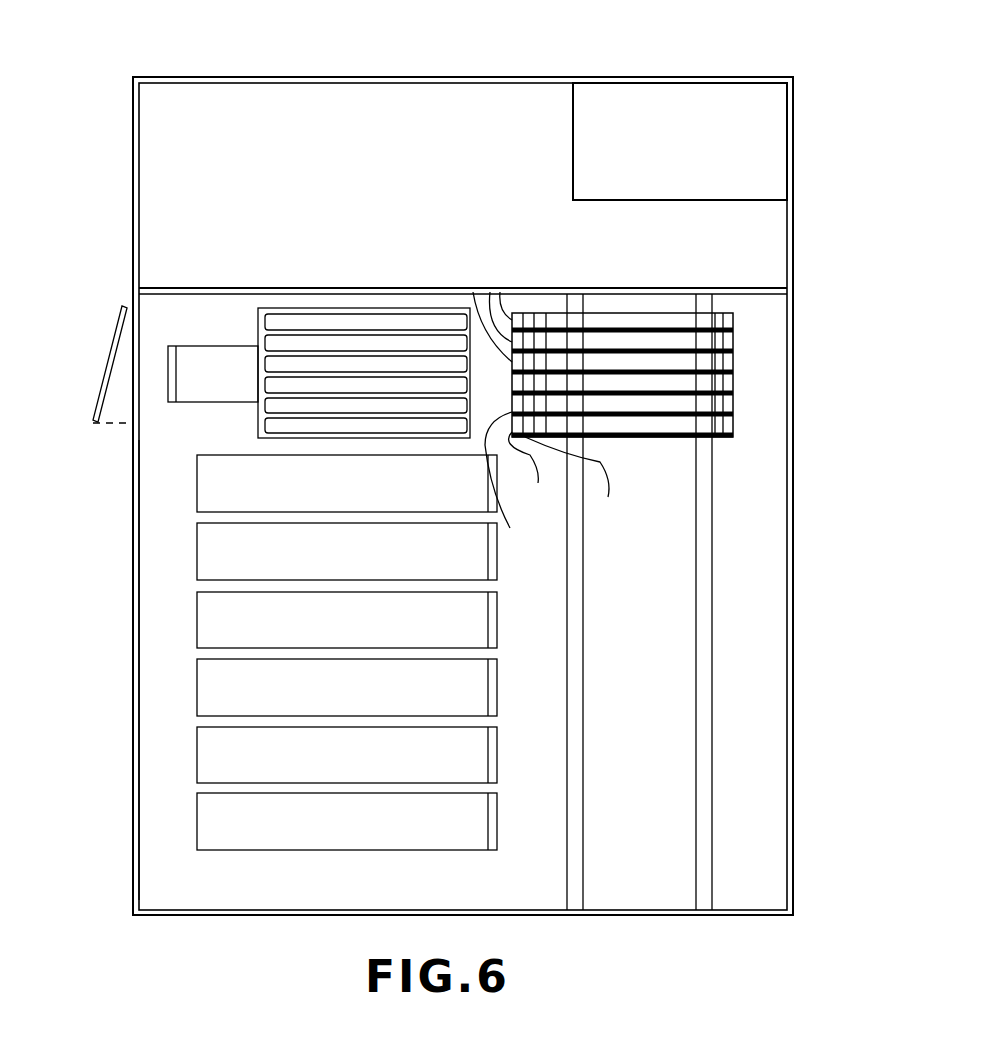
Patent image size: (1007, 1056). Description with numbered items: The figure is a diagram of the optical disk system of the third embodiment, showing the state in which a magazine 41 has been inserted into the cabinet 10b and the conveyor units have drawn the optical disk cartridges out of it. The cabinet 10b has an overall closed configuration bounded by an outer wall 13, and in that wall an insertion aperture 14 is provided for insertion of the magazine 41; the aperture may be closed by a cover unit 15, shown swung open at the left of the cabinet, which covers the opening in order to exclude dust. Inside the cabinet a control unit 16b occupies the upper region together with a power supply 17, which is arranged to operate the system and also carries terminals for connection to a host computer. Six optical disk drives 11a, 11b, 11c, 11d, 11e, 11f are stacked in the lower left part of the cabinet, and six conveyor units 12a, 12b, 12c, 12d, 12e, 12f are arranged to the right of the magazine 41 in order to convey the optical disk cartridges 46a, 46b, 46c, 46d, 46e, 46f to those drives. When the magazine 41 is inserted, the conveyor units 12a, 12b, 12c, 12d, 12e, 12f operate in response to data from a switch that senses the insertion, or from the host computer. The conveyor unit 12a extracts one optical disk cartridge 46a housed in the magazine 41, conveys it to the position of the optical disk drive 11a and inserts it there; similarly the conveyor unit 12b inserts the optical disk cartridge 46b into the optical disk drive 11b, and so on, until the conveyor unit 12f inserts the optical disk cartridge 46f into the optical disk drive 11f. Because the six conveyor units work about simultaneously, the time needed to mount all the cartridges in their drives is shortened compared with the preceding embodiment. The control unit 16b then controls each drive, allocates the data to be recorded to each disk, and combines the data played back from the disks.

The cabinet 10b is at (462, 78).
The control unit 16b is at (302, 110).
The power supply 17 is at (775, 150).
The outer wall 13 is at (133, 461).
The insertion aperture 14 is at (130, 366).
The cover unit 15 is at (101, 398).
The magazine 41 is at (403, 306).
The conveyor unit 12a is at (735, 322).
The conveyor unit 12b is at (740, 340).
The conveyor unit 12c is at (735, 366).
The conveyor unit 12d is at (735, 384).
The conveyor unit 12e is at (735, 405).
The conveyor unit 12f is at (733, 437).
The optical disk cartridge 46a is at (500, 292).
The optical disk cartridge 46b is at (500, 278).
The optical disk cartridge 46c is at (473, 292).
The optical disk cartridge 46d is at (520, 484).
The optical disk cartridge 46e is at (537, 471).
The optical disk cartridge 46f is at (590, 481).
The optical disk drive 11a is at (197, 483).
The optical disk drive 11b is at (197, 551).
The optical disk drive 11c is at (197, 615).
The optical disk drive 11d is at (197, 681).
The optical disk drive 11e is at (197, 750).
The optical disk drive 11f is at (197, 819).